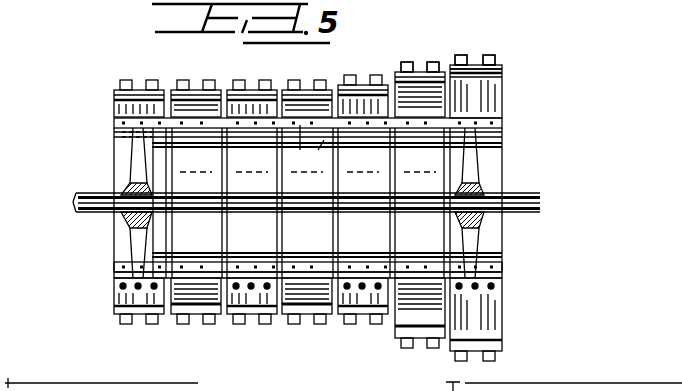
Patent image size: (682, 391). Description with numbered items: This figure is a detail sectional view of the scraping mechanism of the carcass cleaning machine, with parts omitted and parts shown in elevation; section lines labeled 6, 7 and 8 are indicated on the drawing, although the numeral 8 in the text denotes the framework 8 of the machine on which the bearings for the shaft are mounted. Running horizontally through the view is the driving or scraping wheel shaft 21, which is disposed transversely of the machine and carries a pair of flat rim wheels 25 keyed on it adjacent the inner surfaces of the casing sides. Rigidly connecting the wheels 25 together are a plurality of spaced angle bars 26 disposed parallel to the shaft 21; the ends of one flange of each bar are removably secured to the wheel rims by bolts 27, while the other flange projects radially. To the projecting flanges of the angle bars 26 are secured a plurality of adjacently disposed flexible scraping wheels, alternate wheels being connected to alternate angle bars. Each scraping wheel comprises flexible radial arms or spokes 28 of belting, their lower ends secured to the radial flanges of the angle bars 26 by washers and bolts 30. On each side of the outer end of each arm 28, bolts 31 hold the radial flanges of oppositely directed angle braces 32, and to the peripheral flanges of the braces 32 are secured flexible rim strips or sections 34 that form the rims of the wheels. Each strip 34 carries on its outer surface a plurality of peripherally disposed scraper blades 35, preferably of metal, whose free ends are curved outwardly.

The section line 6 is at (126, 340).
The section line 7 is at (159, 334).
The framework 8 is at (468, 160).
The driving or scraping wheel shaft 21 is at (85, 194).
The flat rim wheels 25 is at (136, 164).
The angle bars 26 is at (320, 152).
The bolts 27 is at (502, 143).
The flexible radial arms or spokes 28 is at (364, 350).
The bolts 30 is at (502, 126).
The bolts 31 is at (485, 77).
The angle braces 32 is at (500, 73).
The flexible rim strips or sections 34 is at (404, 95).
The scraper blades 35 is at (432, 62).